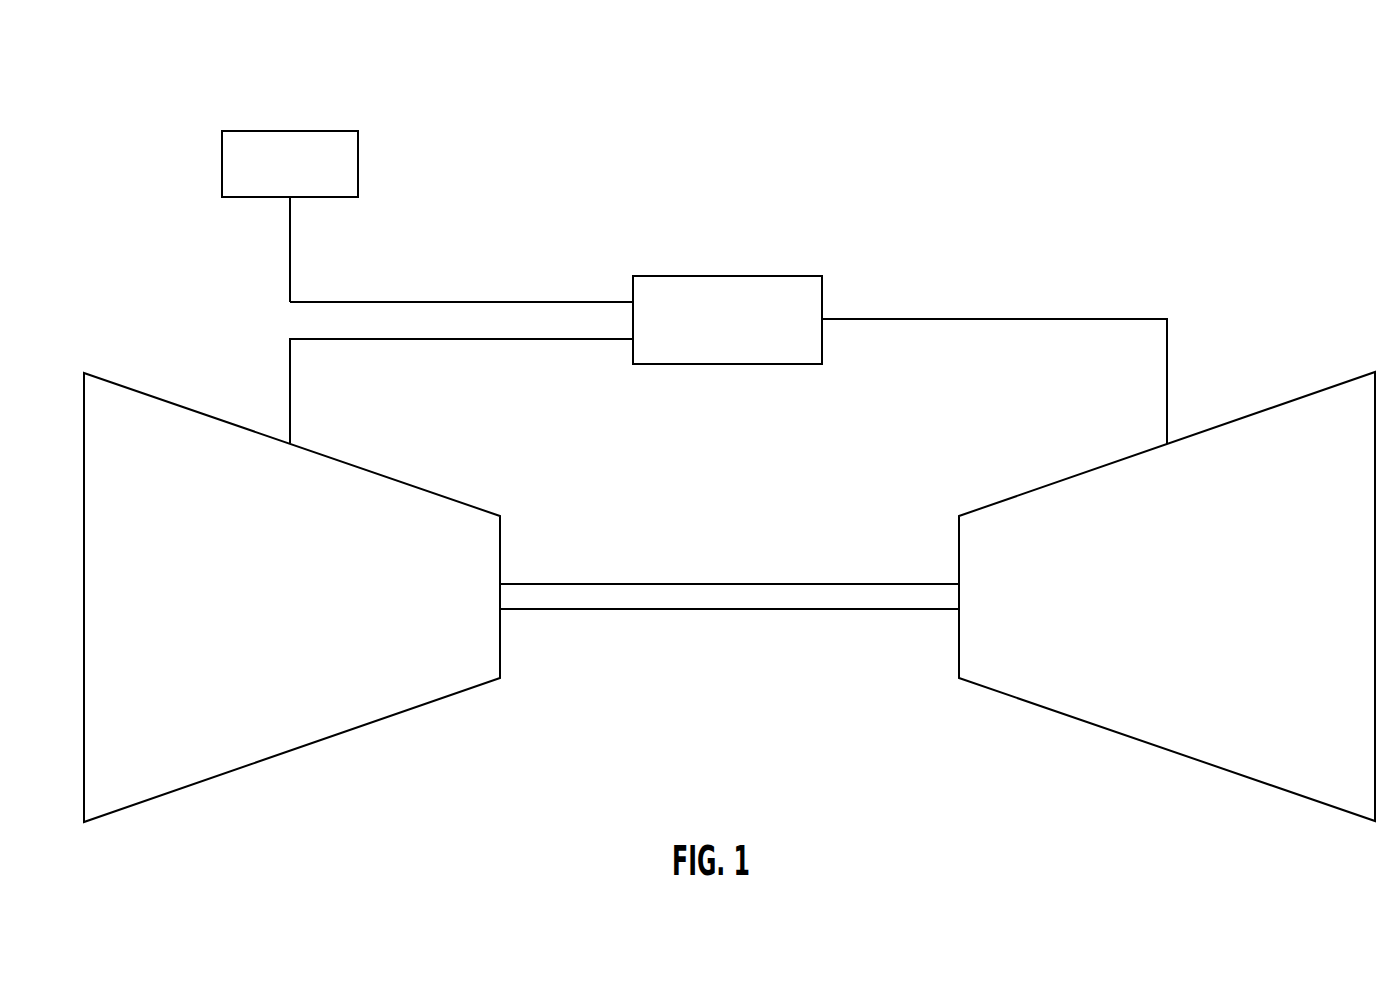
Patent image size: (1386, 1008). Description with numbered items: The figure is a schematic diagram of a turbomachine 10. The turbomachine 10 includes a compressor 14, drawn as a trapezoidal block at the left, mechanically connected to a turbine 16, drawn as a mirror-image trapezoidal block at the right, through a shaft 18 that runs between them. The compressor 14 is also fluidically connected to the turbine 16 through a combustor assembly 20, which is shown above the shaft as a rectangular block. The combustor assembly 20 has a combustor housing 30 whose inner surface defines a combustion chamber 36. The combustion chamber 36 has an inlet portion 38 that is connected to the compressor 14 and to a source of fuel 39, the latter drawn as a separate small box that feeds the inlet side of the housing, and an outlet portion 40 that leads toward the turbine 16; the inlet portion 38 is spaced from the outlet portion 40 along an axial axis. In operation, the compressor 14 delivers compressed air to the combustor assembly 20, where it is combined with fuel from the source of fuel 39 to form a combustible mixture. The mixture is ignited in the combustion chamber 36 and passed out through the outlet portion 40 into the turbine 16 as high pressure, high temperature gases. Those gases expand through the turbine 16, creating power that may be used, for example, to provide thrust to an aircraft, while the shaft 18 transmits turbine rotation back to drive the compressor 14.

The turbomachine 10 is at (96, 82).
The compressor 14 is at (357, 706).
The turbine 16 is at (1102, 706).
The shaft 18 is at (678, 594).
The combustor assembly 20 is at (720, 299).
The combustor housing 30 is at (713, 367).
The combustion chamber 36 is at (684, 295).
The inlet portion 38 is at (633, 297).
The source of fuel 39 is at (359, 160).
The outlet portion 40 is at (823, 323).